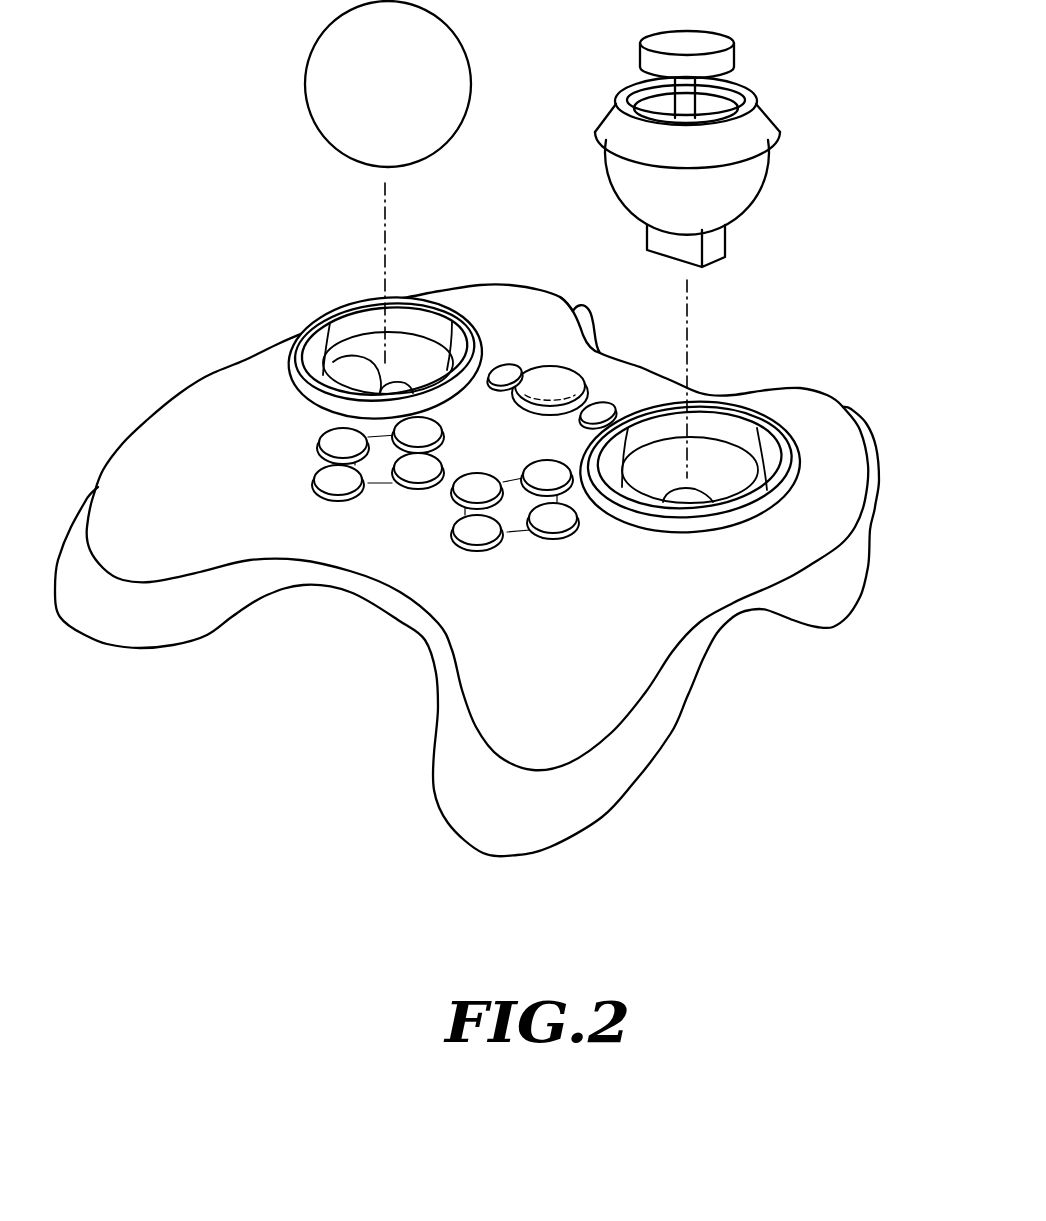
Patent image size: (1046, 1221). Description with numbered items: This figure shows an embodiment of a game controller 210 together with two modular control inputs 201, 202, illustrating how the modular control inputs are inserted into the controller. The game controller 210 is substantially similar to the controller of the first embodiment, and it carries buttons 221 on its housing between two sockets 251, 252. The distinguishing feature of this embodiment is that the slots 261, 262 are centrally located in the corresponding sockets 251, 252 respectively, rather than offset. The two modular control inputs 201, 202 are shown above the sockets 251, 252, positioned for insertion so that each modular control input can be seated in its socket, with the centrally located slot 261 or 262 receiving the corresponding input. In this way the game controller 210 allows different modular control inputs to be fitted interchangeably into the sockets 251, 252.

The joystick 201 is at (743, 190).
The ball 202 is at (442, 50).
The game controller 210 is at (376, 597).
The buttons 221 is at (547, 470).
The socket 251 is at (357, 304).
The socket 252 is at (738, 408).
The slot 261 is at (345, 360).
The slot 262 is at (697, 490).